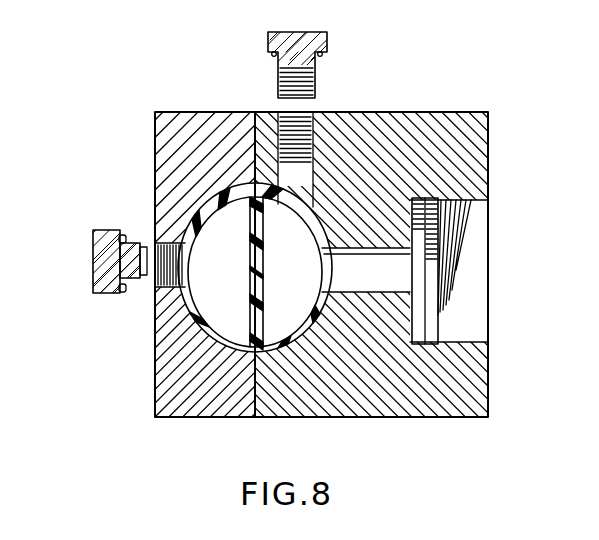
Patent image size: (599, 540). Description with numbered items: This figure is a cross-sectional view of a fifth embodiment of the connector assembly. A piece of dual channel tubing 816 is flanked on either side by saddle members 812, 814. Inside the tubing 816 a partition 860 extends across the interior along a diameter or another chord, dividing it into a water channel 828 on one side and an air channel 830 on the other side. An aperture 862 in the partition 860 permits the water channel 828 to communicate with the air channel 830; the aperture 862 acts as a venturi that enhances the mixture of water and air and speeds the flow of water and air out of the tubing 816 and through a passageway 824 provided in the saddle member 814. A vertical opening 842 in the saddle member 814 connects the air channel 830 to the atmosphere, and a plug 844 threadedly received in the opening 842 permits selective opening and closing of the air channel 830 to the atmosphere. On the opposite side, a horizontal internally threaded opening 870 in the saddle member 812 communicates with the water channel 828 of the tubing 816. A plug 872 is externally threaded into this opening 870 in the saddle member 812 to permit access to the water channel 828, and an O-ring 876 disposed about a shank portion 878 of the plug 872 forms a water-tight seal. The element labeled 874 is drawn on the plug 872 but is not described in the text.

The saddle member 812 is at (180, 112).
The saddle member 814 is at (488, 132).
The dual channel tubing 816 is at (284, 352).
The passageway 824 is at (402, 271).
The water channel 828 is at (215, 308).
The air channel 830 is at (332, 268).
The vertical opening 842 is at (306, 180).
The plug 844 is at (325, 33).
The partition 860 is at (250, 222).
The aperture 862 is at (257, 271).
The horizontal internally threaded opening 870 is at (146, 246).
The plug 872 is at (118, 264).
The retaining lip 874 is at (130, 292).
The O-ring 876 is at (121, 233).
The shank portion 878 is at (95, 288).